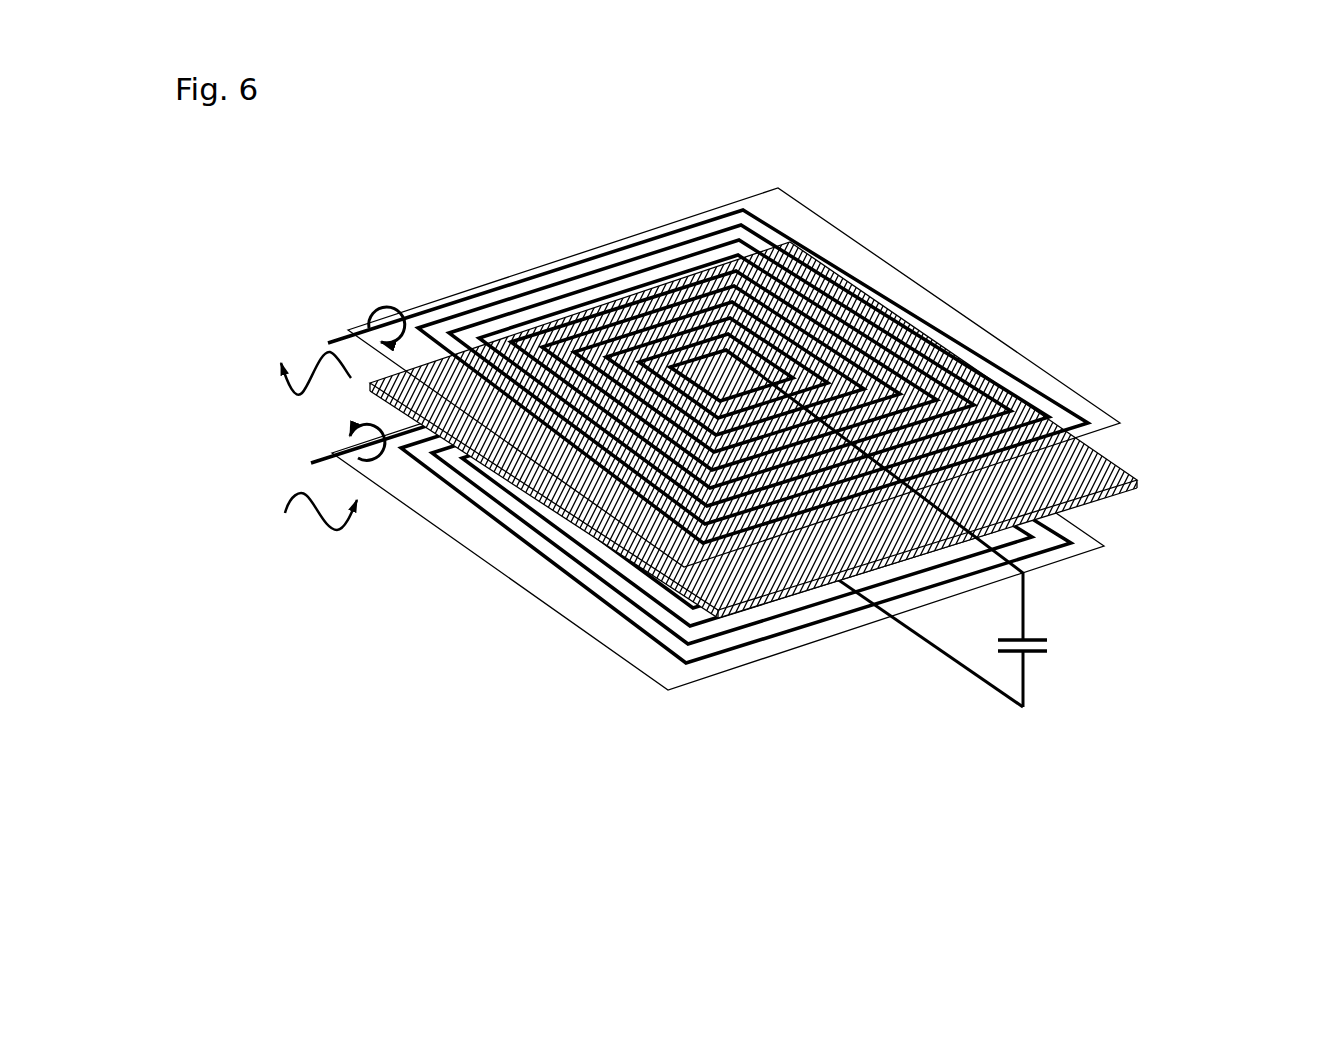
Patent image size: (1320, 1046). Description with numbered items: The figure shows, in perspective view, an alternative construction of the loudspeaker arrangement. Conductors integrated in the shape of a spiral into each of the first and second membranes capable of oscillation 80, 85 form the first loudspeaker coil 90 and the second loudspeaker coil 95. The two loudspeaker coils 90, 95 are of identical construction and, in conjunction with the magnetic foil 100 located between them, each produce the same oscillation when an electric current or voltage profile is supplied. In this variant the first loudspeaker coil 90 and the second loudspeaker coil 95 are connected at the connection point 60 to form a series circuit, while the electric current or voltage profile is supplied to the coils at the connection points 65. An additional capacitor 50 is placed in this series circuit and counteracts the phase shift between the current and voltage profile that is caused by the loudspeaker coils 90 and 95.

The capacitor 50 is at (1052, 657).
The connection point 60 is at (1043, 719).
The connection point 65 is at (312, 343).
The first membrane capable of oscillation 80 is at (776, 659).
The second membrane capable of oscillation 85 is at (733, 192).
The first loudspeaker coil 90 is at (650, 650).
The second loudspeaker coil 95 is at (492, 306).
The magnetic foil 100 is at (1122, 450).